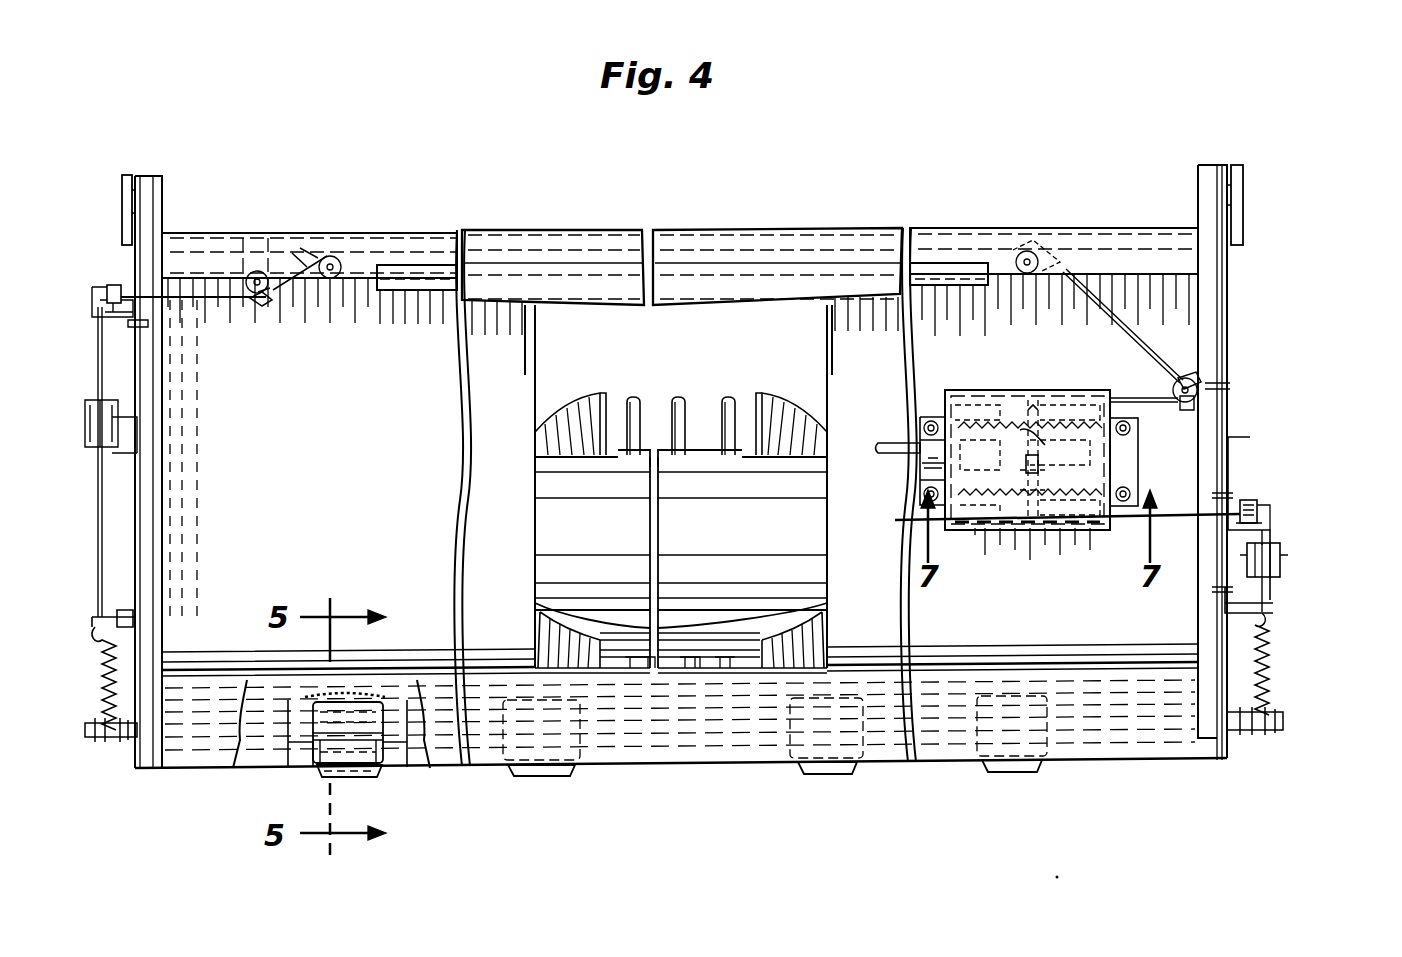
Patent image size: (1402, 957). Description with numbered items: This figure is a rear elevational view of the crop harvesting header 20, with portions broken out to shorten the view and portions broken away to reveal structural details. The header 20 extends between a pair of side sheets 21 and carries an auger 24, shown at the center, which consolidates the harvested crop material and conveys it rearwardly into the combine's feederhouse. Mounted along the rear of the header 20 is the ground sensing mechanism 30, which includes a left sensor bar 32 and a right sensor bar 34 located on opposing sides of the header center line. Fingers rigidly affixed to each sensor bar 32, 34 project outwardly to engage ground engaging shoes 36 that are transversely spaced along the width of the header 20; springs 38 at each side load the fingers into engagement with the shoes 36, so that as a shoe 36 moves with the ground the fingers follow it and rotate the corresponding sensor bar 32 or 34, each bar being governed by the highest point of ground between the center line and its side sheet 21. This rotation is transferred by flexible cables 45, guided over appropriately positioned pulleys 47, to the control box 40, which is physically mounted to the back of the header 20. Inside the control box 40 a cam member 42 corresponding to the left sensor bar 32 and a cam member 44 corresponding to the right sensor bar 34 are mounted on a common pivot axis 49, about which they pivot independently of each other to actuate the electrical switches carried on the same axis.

The crop harvesting header 20 is at (903, 160).
The side sheet 21 is at (140, 388).
The auger 24 is at (590, 395).
The ground sensing mechanism 30 is at (1302, 598).
The left sensor bar 32 is at (133, 738).
The right sensor bar 34 is at (1232, 735).
The ground engaging shoes 36 is at (355, 778).
The springs 38 is at (95, 648).
The control box 40 is at (980, 392).
The cam member 42 is at (1088, 398).
The cam member 44 is at (985, 535).
The flexible cables 45 is at (98, 497).
The pulleys 47 is at (122, 290).
The pivot axis 49 is at (1033, 400).